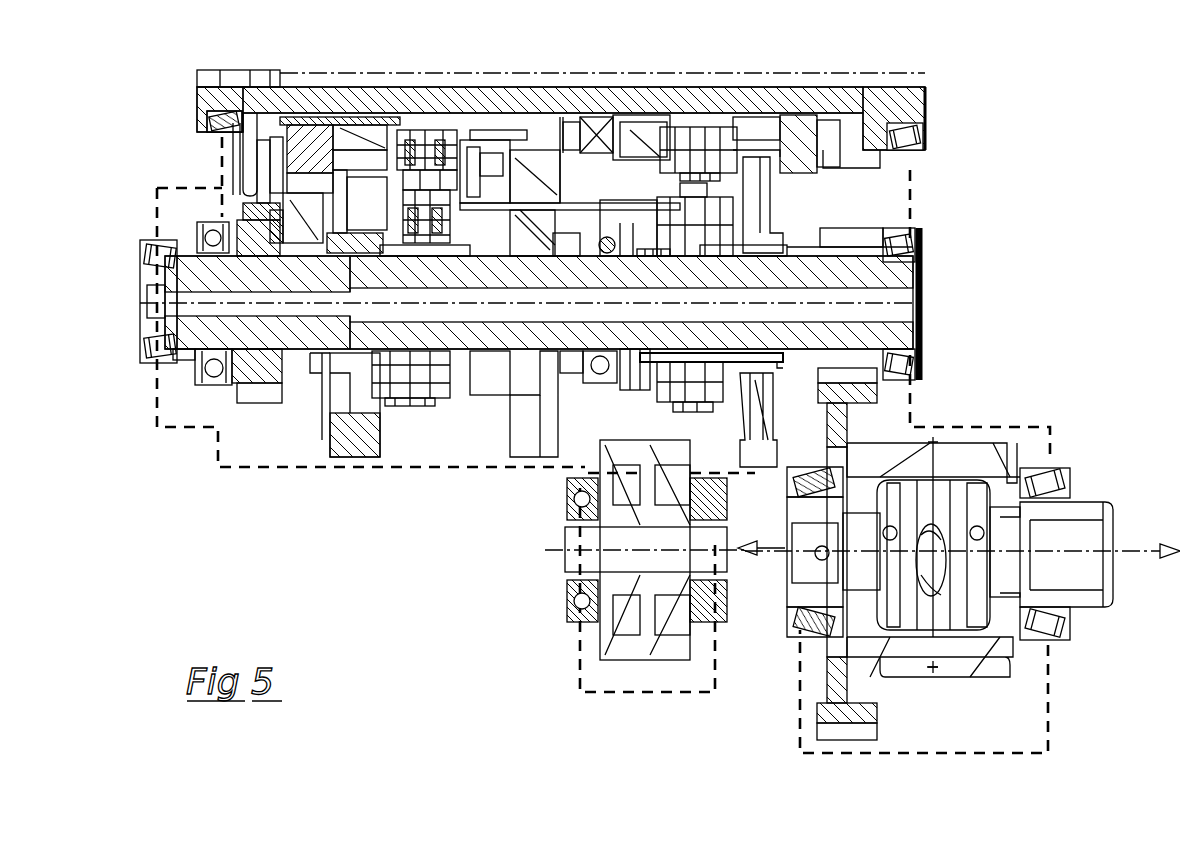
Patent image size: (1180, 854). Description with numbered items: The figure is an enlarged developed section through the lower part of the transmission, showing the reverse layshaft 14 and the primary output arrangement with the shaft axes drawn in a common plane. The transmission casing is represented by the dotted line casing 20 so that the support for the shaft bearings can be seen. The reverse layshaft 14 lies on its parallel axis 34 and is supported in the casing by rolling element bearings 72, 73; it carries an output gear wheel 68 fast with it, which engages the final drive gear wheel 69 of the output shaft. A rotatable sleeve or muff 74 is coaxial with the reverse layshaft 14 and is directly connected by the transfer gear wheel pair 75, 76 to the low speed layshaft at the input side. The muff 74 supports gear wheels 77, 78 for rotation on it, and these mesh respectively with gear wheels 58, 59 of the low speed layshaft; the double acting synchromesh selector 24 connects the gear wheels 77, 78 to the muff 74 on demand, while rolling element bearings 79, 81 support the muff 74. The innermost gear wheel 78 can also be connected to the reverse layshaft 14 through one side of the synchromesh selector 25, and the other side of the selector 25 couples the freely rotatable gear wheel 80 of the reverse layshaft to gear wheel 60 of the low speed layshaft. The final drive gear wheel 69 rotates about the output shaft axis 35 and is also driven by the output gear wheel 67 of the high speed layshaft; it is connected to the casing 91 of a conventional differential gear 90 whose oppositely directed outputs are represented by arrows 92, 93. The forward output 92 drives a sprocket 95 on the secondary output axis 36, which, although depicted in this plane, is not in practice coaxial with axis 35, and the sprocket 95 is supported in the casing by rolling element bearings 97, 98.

The reverse layshaft 14 is at (150, 325).
The casing 20 is at (222, 150).
The double acting synchromesh selector 24 is at (412, 406).
The synchromesh selector 25 is at (703, 410).
The axis 34 is at (925, 300).
The output shaft axis 35 is at (1097, 557).
The secondary output axis 36 is at (560, 555).
The gear wheel 58 is at (355, 160).
The gear wheel 59 is at (530, 130).
The gear wheel 60 is at (760, 130).
The output gear wheel 67 is at (880, 168).
The output gear wheel 68 is at (870, 230).
The final drive gear wheel 69 is at (843, 735).
The rolling element bearing 72 is at (145, 250).
The rolling element bearing 73 is at (925, 360).
The muff 74 is at (322, 355).
The transfer gear wheel 75 is at (252, 398).
The transfer gear wheel 76 is at (225, 118).
The gear wheel 77 is at (372, 450).
The gear wheel 78 is at (525, 450).
The rolling element bearing 79 is at (600, 383).
The gear wheel 80 is at (757, 467).
The rolling element bearing 81 is at (195, 380).
The differential gear 90 is at (955, 688).
The casing 91 is at (890, 683).
The forward output 92 is at (1130, 548).
The output 93 is at (770, 565).
The sprocket 95 is at (632, 648).
The rolling element bearing 97 is at (575, 612).
The rolling element bearing 98 is at (720, 640).